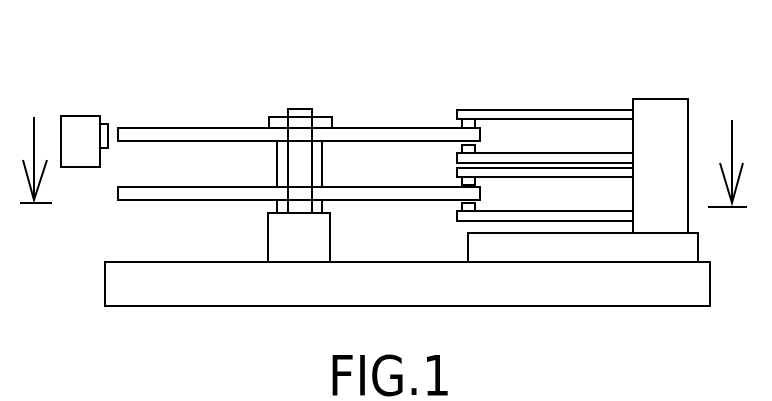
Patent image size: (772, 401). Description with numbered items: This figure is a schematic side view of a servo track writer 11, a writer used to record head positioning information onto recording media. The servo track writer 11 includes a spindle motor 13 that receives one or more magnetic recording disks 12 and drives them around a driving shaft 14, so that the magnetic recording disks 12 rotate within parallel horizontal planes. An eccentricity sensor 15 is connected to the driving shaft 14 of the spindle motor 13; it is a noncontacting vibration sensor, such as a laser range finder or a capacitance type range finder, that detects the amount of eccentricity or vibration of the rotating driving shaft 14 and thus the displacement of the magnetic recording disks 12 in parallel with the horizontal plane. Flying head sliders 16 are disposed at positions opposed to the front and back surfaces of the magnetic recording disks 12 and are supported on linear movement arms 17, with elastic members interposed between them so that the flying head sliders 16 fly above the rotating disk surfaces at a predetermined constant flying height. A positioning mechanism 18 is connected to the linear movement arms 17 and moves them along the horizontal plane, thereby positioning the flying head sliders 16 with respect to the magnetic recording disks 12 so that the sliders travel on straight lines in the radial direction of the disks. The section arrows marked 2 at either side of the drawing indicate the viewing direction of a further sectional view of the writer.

The section line 2- 2 is at (388, 128).
The servo track writer 11 is at (395, 87).
The magnetic recording disks 12 is at (132, 129).
The spindle motor 13 is at (278, 228).
The driving shaft 14 is at (302, 117).
The eccentricity sensor 15 is at (78, 158).
The flying head sliders 16 is at (460, 124).
The linear movement arms 17 is at (540, 110).
The positioning mechanism 18 is at (690, 250).